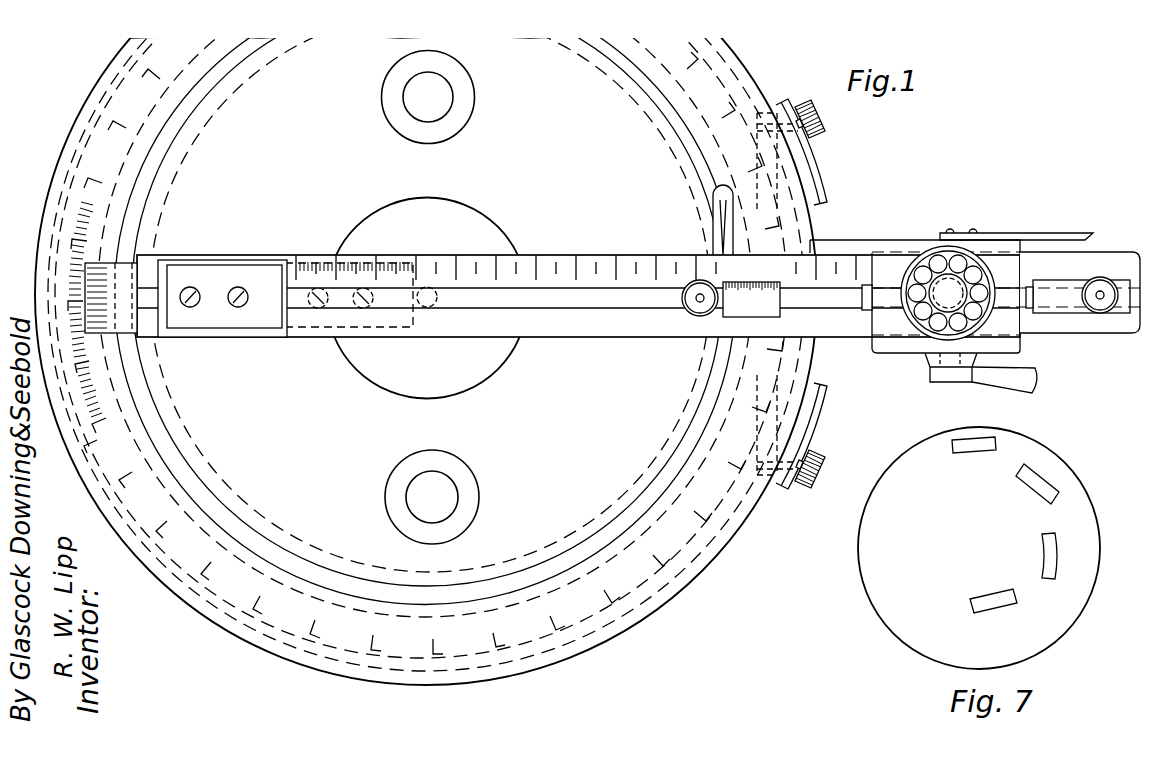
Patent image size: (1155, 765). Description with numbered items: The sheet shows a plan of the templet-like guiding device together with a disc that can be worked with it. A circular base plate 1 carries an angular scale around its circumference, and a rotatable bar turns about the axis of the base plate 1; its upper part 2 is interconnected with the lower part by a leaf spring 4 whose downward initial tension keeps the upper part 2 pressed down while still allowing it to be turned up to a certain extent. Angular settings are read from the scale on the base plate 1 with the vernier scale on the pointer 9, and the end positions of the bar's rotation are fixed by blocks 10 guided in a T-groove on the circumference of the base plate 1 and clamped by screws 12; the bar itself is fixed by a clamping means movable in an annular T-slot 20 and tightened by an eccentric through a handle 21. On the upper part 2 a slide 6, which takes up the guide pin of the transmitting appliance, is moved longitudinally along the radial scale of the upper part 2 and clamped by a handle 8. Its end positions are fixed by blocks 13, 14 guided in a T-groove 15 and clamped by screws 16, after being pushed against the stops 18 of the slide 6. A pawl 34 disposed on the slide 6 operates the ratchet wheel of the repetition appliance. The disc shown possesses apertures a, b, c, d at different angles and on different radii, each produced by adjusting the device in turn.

In FIG. 1, the base plate 1 is at (645, 612).
In FIG. 1, the upper part of the rotatable bar 2 is at (605, 338).
In FIG. 1, the leaf spring 4 is at (240, 328).
In FIG. 1, the slide 6 is at (888, 332).
In FIG. 1, the handle 8 is at (1000, 382).
In FIG. 1, the pointer 9 is at (108, 327).
In FIG. 1, the blocks 10 is at (805, 420).
In FIG. 1, the screws 12 is at (812, 470).
In FIG. 1, the block 13 is at (777, 283).
In FIG. 1, the block 14 is at (1075, 314).
In FIG. 1, the T-groove 15 is at (553, 306).
In FIG. 1, the screws 16 is at (1108, 306).
In FIG. 1, the stops 18 is at (862, 302).
In FIG. 1, the annular T-slot 20 is at (678, 125).
In FIG. 1, the handle 21 is at (730, 198).
In FIG. 1, the pawl 34 is at (1030, 236).
In FIG. 7, the aperture a is at (995, 445).
In FIG. 7, the aperture b is at (1050, 492).
In FIG. 7, the aperture c is at (1055, 555).
In FIG. 7, the aperture d is at (1005, 600).